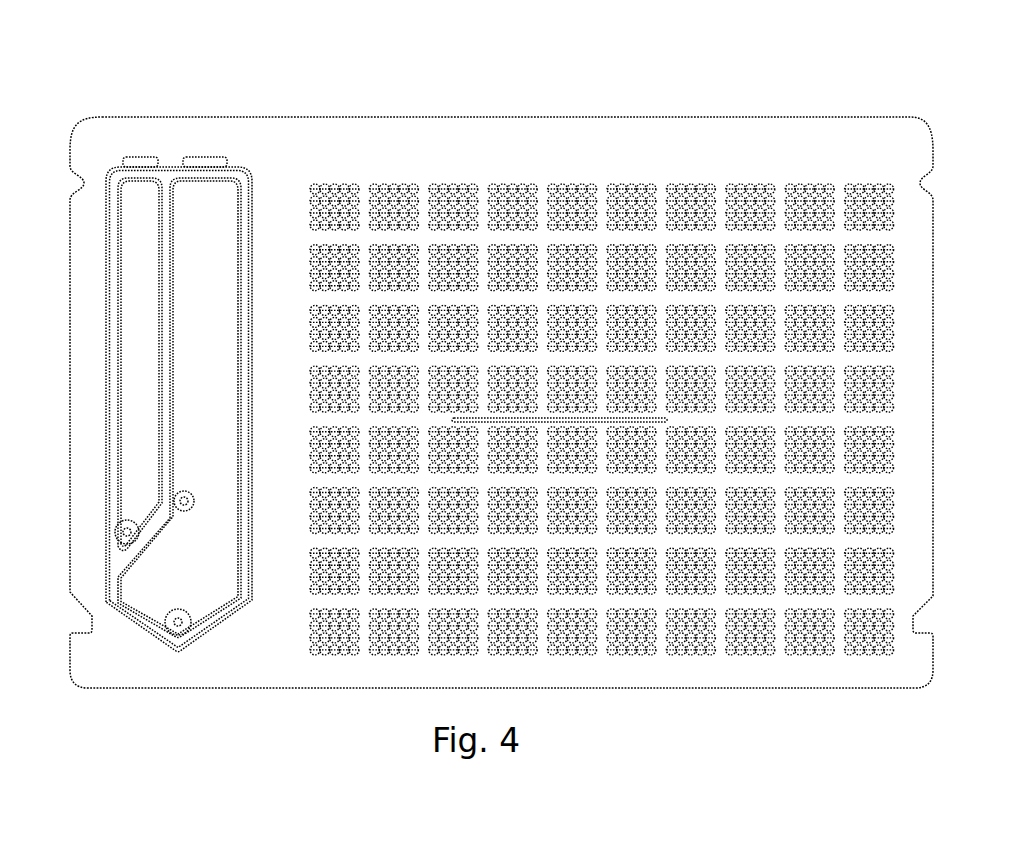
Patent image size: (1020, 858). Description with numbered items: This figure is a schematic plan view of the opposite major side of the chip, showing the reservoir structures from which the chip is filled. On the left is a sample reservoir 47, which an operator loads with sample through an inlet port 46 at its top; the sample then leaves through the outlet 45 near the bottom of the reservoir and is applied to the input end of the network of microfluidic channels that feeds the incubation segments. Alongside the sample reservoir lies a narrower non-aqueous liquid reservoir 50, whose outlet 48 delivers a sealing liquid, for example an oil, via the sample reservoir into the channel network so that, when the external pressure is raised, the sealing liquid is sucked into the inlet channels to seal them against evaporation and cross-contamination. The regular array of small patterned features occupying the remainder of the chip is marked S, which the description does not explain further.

The outlet 45 is at (178, 622).
The inlet port 46 is at (207, 162).
The sample reservoir 47 is at (218, 225).
The outlet 48 is at (127, 531).
The non-aqueous liquid reservoir 50 is at (137, 218).
The sensor array S is at (413, 190).